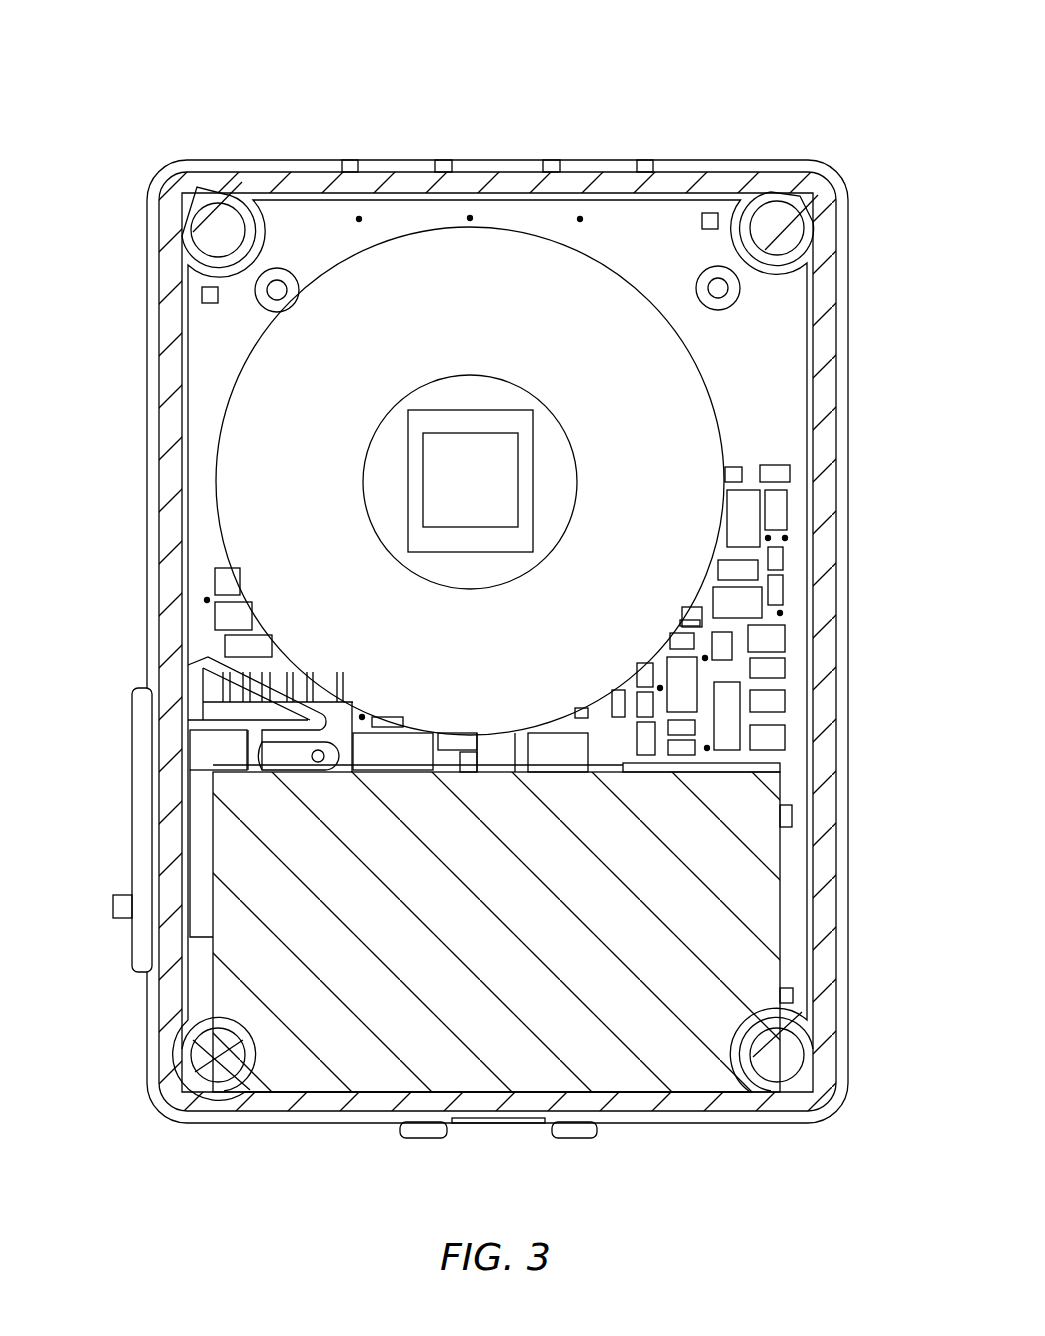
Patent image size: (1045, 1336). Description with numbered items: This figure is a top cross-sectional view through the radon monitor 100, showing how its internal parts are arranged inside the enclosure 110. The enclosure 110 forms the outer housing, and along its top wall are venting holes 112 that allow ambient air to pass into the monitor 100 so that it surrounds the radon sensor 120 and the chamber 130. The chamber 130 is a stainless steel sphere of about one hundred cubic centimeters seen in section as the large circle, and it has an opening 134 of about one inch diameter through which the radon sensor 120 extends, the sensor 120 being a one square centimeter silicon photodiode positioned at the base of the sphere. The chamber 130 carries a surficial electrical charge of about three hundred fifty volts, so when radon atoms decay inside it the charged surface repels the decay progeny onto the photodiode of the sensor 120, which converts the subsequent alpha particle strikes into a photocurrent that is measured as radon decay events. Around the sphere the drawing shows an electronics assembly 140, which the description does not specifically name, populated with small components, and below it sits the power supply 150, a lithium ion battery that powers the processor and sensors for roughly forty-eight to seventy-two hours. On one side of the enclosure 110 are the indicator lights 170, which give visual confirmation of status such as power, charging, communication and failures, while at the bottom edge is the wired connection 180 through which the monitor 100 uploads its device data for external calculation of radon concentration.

The monitor 100 is at (168, 56).
The enclosure 110 is at (286, 160).
The venting holes 112 is at (645, 160).
The radon sensor 120 is at (518, 455).
The chamber 130 is at (707, 382).
The opening 134 is at (367, 442).
The circuit board 140 is at (805, 640).
The power supply 150 is at (783, 913).
The indicator lights 170 is at (103, 910).
The wired connection 180 is at (508, 1125).